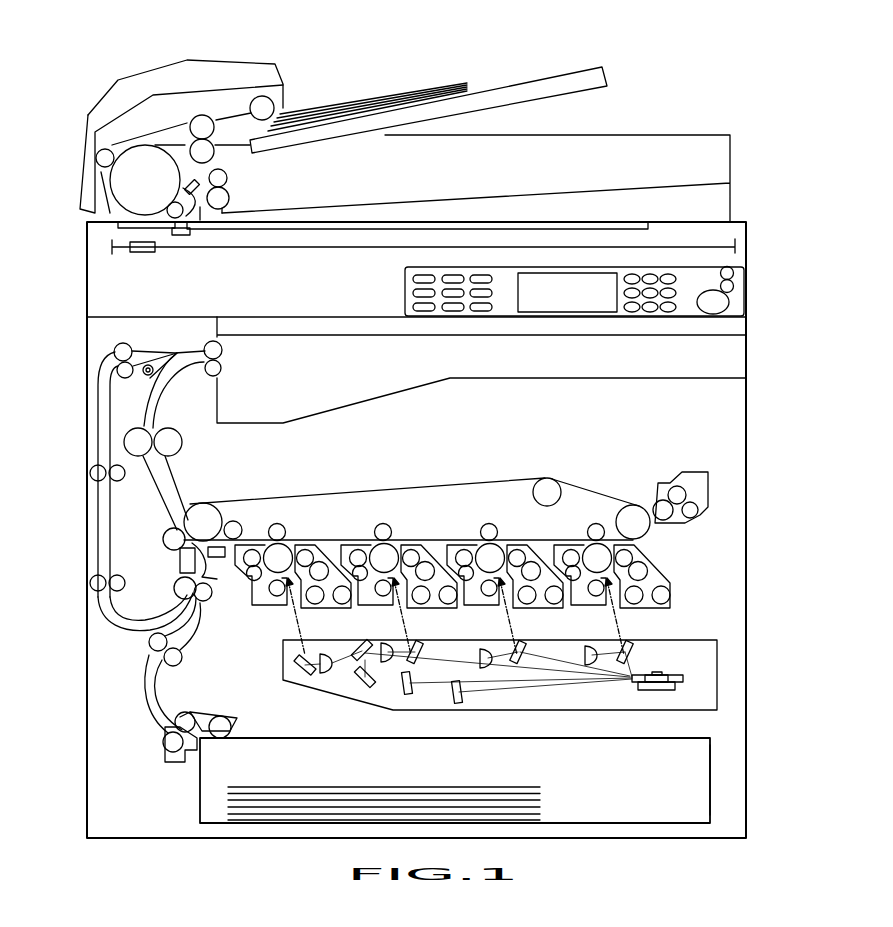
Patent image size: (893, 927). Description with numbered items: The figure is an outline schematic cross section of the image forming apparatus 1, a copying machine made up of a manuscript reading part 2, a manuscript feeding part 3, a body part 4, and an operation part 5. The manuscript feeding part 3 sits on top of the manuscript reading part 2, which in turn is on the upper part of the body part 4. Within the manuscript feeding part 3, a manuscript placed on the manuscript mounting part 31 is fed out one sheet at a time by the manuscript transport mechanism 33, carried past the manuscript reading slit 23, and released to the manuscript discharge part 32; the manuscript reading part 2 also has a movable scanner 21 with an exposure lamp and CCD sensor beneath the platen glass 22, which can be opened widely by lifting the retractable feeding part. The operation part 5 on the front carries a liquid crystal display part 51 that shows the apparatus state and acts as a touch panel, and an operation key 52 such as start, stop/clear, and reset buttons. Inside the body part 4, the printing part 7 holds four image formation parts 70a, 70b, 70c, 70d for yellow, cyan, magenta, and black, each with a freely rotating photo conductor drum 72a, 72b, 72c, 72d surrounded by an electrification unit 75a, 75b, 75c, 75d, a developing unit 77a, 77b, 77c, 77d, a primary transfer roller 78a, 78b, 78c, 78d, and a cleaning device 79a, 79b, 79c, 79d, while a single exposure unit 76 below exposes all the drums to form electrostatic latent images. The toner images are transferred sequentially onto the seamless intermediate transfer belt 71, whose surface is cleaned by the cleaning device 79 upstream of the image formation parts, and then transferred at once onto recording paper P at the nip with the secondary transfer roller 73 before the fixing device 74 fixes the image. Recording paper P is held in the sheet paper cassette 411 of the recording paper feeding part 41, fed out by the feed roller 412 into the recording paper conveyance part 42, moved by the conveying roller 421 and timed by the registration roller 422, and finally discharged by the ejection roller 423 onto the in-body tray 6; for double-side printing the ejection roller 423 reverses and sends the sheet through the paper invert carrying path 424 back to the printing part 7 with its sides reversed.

The image forming apparatus 1 is at (683, 86).
The manuscript reading part 2 is at (70, 234).
The manuscript feeding part 3 is at (418, 62).
The manuscript mounting part 31 is at (480, 82).
The manuscript discharge part 32 is at (480, 198).
The manuscript transport mechanism 33 is at (130, 80).
The platen glass 22 is at (575, 224).
The scanner 21 is at (146, 254).
The manuscript reading slit 23 is at (153, 228).
The operation part 5 is at (760, 287).
The liquid crystal display part 51 is at (575, 305).
The operation key 52 is at (650, 293).
The body part 4 is at (760, 422).
The in-body tray 6 is at (333, 400).
The printing part 7 is at (729, 494).
The cleaning device 79 is at (690, 472).
The intermediate transfer belt 71 is at (307, 492).
The secondary transfer roller 73 is at (167, 547).
The fixing device 74 is at (182, 441).
The image formation part 70a is at (235, 613).
The image formation part 70b is at (341, 613).
The image formation part 70c is at (447, 613).
The image formation part 70d is at (554, 613).
The photo conductor drum 72a is at (278, 558).
The photo conductor drum 72b is at (384, 558).
The photo conductor drum 72c is at (490, 558).
The photo conductor drum 72d is at (597, 558).
The electrification unit 75a is at (275, 596).
The electrification unit 75b is at (381, 596).
The electrification unit 75c is at (487, 596).
The electrification unit 75d is at (594, 596).
The developing unit 77a is at (320, 550).
The developing unit 77b is at (425, 552).
The developing unit 77c is at (530, 552).
The developing unit 77d is at (655, 580).
The primary transfer roller 78a is at (279, 527).
The primary transfer roller 78b is at (385, 527).
The primary transfer roller 78c is at (491, 527).
The primary transfer roller 78d is at (598, 527).
The cleaning device 79a is at (251, 549).
The cleaning device 79b is at (357, 549).
The cleaning device 79c is at (463, 549).
The cleaning device 79d is at (570, 549).
The exposure unit 76 is at (722, 666).
The recording paper feeding part 41 is at (732, 748).
The sheet paper cassette 411 is at (710, 773).
The feed roller 412 is at (222, 723).
The recording paper conveyance part 42 is at (207, 641).
The conveying roller 421 is at (182, 663).
The registration roller 422 is at (207, 600).
The ejection roller 423 is at (215, 352).
The paper invert carrying path 424 is at (95, 520).
The recording paper P is at (478, 790).